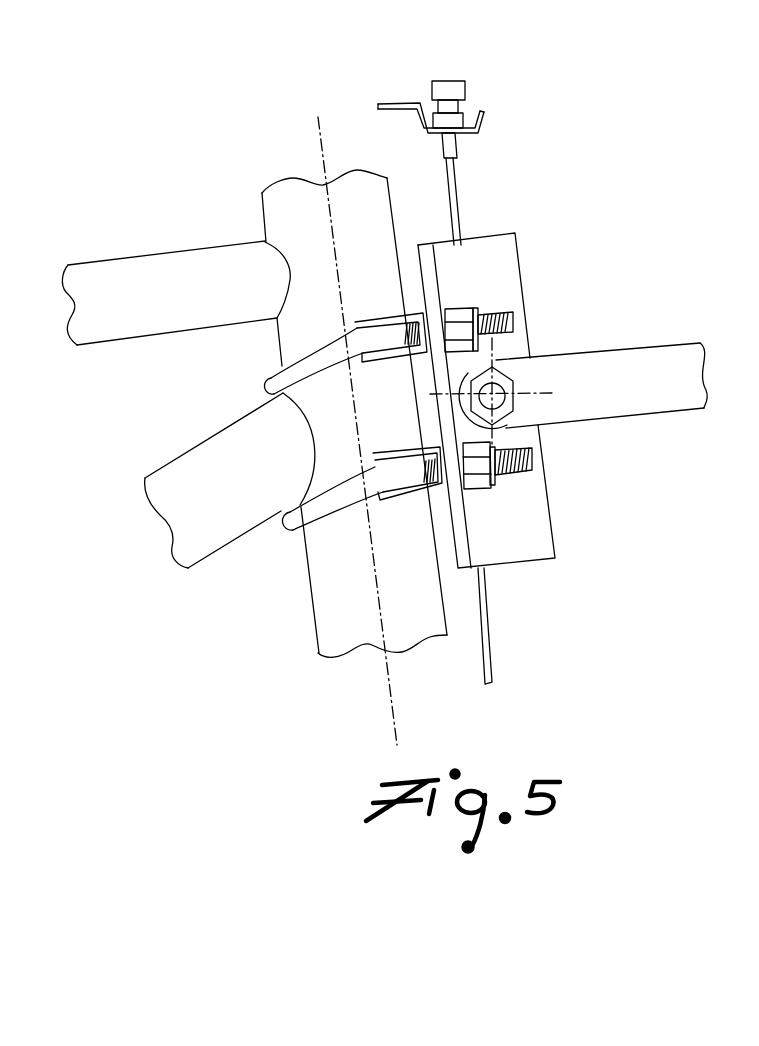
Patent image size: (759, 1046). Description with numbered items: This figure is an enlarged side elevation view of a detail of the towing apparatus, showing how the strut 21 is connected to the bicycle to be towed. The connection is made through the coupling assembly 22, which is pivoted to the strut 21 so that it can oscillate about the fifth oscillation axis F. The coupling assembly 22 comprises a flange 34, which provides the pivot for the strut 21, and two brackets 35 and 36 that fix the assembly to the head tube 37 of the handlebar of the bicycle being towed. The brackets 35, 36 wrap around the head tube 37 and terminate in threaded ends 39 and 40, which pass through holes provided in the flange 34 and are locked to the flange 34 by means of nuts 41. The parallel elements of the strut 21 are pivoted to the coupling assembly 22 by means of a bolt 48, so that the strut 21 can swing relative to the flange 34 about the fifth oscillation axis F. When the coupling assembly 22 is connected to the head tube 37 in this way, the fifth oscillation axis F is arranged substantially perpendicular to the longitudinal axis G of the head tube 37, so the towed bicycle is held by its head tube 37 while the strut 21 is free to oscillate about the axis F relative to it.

The strut 21 is at (646, 347).
The coupling assembly 22 is at (495, 222).
The flange 34 is at (520, 553).
The bracket 35 is at (270, 387).
The bracket 36 is at (281, 530).
The head tube 37 is at (280, 218).
The threaded end 39 is at (512, 313).
The threaded end 40 is at (530, 457).
The nut 41 is at (463, 308).
The bolt 48 is at (465, 408).
The longitudinal axis of the head tube G is at (307, 117).
The fifth oscillation axis F is at (545, 395).